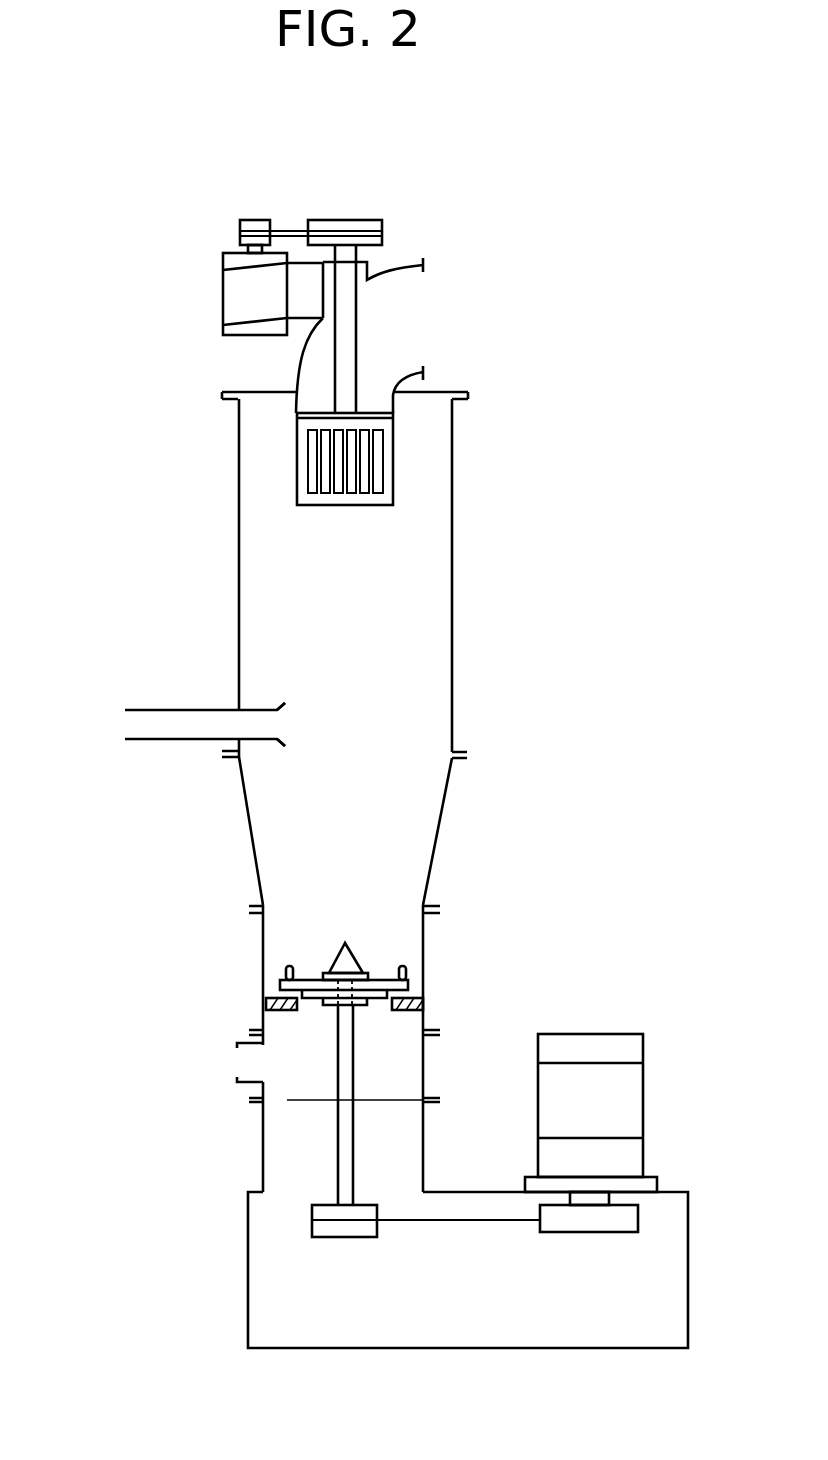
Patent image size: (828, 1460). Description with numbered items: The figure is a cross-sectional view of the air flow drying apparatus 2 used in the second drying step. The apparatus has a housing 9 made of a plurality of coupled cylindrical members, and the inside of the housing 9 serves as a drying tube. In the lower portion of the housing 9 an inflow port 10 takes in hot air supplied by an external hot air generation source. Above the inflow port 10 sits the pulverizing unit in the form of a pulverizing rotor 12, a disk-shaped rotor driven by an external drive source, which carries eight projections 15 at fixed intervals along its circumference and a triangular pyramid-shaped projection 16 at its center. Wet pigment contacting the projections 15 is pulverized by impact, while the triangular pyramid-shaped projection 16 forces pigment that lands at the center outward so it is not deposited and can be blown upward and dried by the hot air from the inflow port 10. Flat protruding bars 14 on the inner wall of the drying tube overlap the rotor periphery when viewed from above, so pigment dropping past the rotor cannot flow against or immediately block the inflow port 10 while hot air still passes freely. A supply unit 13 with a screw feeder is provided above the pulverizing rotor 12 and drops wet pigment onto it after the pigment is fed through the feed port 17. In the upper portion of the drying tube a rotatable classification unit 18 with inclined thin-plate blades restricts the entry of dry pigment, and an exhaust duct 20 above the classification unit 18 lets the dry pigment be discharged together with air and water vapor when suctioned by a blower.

The air flow drying apparatus 2 is at (222, 394).
The housing 9 is at (453, 585).
The inflow port 10 is at (243, 1068).
The pulverizing rotor 12 is at (410, 985).
The supply unit 13 is at (125, 722).
The protruding bar 14 is at (403, 1010).
The projection 15 is at (280, 978).
The triangular pyramid-shaped projection 16 is at (336, 966).
The feed port 17 is at (268, 730).
The classification unit 18 is at (395, 460).
The exhaust duct 20 is at (412, 328).